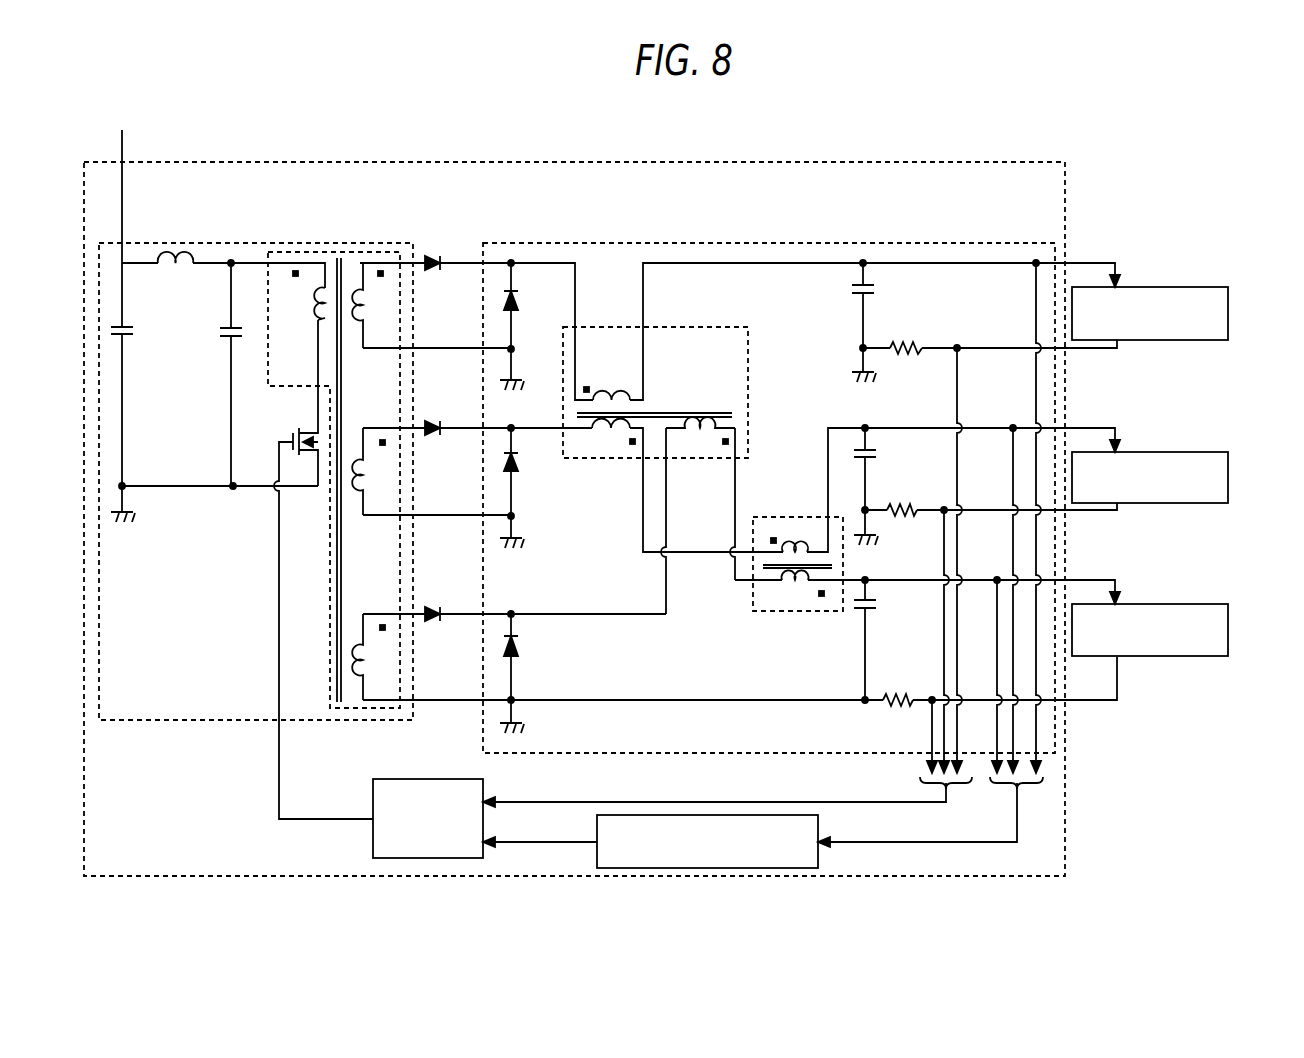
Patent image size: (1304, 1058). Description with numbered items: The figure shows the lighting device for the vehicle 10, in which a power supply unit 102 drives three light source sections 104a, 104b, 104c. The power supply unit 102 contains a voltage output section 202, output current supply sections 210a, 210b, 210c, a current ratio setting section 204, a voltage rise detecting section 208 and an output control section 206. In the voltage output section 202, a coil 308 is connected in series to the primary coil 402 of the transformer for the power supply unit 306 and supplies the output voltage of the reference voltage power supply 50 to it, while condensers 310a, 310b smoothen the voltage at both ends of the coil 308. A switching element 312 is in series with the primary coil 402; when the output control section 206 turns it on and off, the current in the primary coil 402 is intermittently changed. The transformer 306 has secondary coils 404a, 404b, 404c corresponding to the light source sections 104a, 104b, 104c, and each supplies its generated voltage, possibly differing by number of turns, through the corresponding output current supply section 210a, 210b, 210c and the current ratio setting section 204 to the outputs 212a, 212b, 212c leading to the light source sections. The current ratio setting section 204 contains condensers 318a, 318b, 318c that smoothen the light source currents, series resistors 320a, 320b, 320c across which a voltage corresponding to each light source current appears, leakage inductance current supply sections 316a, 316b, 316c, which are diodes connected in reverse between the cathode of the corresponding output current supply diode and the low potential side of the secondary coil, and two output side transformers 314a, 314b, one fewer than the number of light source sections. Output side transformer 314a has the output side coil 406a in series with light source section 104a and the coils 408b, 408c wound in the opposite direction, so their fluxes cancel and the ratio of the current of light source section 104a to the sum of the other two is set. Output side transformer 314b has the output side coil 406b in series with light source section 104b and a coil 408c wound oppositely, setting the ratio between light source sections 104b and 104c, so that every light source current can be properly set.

The lighting device for the vehicle 10 is at (1166, 188).
The reference voltage power supply 50 is at (122, 185).
The power supply unit 102 is at (922, 161).
The light source section 104a is at (1229, 312).
The light source section 104b is at (1229, 480).
The light source section 104c is at (1229, 629).
The voltage output section 202 is at (245, 242).
The current ratio setting section 204 is at (590, 242).
The output control section 206 is at (426, 778).
The voltage rise detecting section 208 is at (819, 827).
The output current supply section 210a is at (432, 255).
The output current supply section 210b is at (432, 422).
The output current supply section 210c is at (432, 608).
The output line 212a is at (1034, 260).
The output line 212b is at (1008, 426).
The output line 212c is at (995, 576).
The transformer for the power supply unit 306 is at (340, 251).
The coil 308 is at (172, 256).
The condenser 310a is at (135, 328).
The condenser 310b is at (225, 339).
The switching element 312 is at (302, 431).
The output side transformer 314a is at (607, 326).
The output side transformer 314b is at (758, 516).
The leakage inductance current supply section 316a is at (514, 312).
The leakage inductance current supply section 316b is at (514, 470).
The leakage inductance current supply section 316c is at (514, 655).
The condenser 318a is at (875, 289).
The condenser 318b is at (875, 454).
The condenser 318c is at (868, 604).
The series resistor 320a is at (912, 346).
The series resistor 320b is at (891, 507).
The series resistor 320c is at (891, 699).
The primary coil 402 is at (310, 260).
The secondary coil 404a is at (374, 260).
The secondary coil 404b is at (359, 430).
The secondary coil 404c is at (359, 615).
The output side coil 406a is at (610, 390).
The output side coil 406b is at (796, 536).
The output side coil 408b is at (610, 445).
The output side coil 408c is at (703, 445).